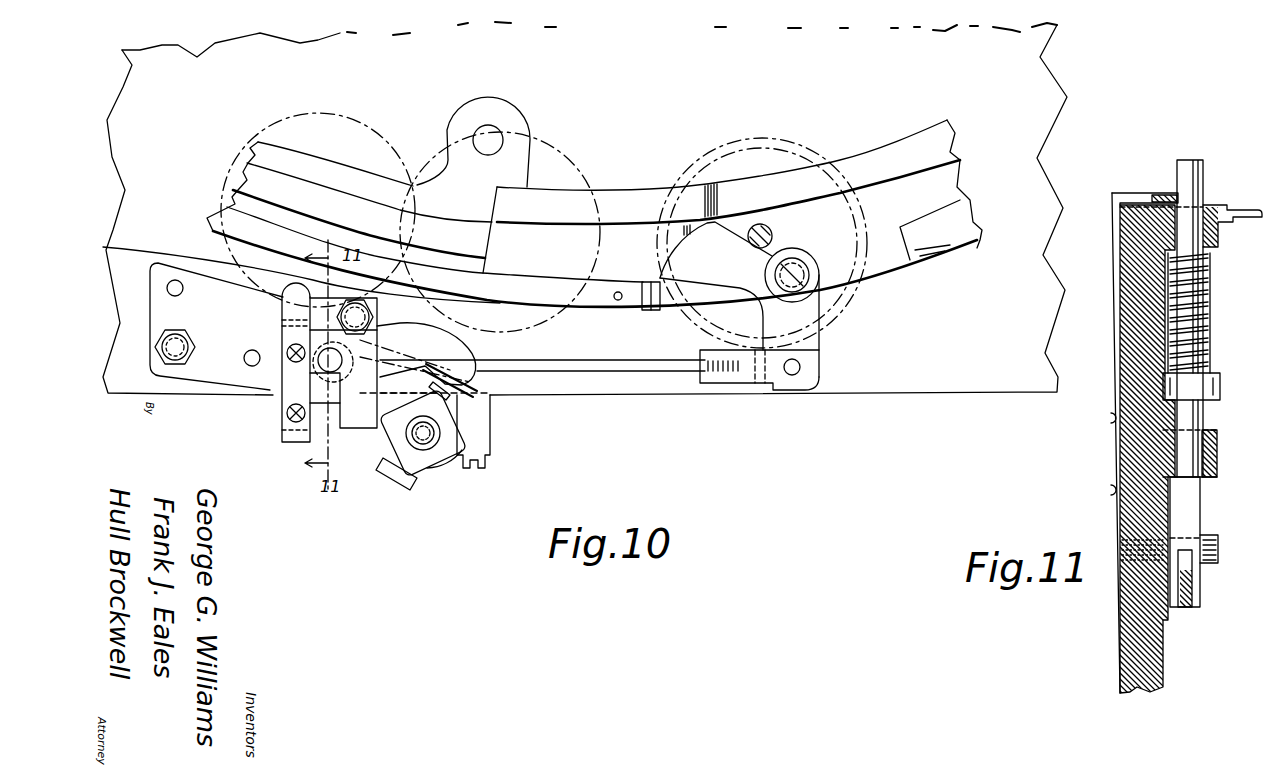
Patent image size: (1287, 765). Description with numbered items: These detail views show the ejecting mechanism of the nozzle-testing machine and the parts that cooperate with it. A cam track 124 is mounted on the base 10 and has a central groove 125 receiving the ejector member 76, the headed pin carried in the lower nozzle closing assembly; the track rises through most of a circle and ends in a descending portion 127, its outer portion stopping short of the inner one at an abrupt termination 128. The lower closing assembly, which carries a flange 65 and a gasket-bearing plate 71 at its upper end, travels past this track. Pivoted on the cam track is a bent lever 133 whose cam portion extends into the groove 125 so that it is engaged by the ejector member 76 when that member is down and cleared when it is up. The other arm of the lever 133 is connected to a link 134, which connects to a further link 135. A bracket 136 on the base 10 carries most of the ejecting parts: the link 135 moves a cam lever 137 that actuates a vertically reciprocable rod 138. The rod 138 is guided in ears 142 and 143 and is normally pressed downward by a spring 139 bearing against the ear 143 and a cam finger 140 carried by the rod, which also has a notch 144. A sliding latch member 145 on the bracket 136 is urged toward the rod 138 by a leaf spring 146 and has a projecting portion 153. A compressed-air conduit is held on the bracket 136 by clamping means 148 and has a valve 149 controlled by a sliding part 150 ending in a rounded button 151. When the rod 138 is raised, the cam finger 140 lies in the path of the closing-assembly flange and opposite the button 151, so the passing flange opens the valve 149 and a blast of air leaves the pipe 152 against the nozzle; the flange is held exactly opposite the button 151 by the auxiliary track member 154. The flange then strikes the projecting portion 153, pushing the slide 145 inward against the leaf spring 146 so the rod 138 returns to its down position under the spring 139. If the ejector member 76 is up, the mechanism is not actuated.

In FIG. 10, the base 10 is at (585, 208).
In FIG. 10, the flange 65 is at (560, 165).
In FIG. 10, the plate 71 is at (368, 127).
In FIG. 10, the ejector member 76 is at (774, 235).
In FIG. 10, the cam track 124 is at (937, 146).
In FIG. 10, the central groove 125 is at (948, 188).
In FIG. 10, the descending portion 127 is at (636, 197).
In FIG. 10, the abrupt termination 128 is at (945, 254).
In FIG. 10, the bent lever 133 is at (812, 300).
In FIG. 10, the link 134 is at (812, 358).
In FIG. 10, the link 135 is at (652, 359).
In FIG. 11, the link 135 is at (1190, 607).
In FIG. 11, the bracket 136 is at (1130, 613).
In FIG. 11, the cam lever 137 is at (1200, 515).
In FIG. 10, the vertically reciprocable rod 138 is at (340, 368).
In FIG. 11, the vertically reciprocable rod 138 is at (1218, 455).
In FIG. 11, the spring 139 is at (1212, 308).
In FIG. 10, the cam finger 140 is at (418, 354).
In FIG. 11, the cam finger 140 is at (1222, 392).
In FIG. 11, the ear 142 is at (1220, 440).
In FIG. 11, the ear 143 is at (1219, 238).
In FIG. 11, the notch 144 is at (1197, 207).
In FIG. 10, the sliding latch member 145 is at (291, 387).
In FIG. 11, the sliding latch member 145 is at (1143, 195).
In FIG. 10, the leaf spring 146 is at (296, 443).
In FIG. 11, the leaf spring 146 is at (1117, 273).
In FIG. 10, the clamping means 148 is at (492, 452).
In FIG. 10, the valve 149 is at (428, 475).
In FIG. 10, the sliding part 150 is at (470, 406).
In FIG. 10, the button 151 is at (483, 389).
In FIG. 10, the pipe 152 is at (445, 433).
In FIG. 10, the projecting portion 153 is at (291, 310).
In FIG. 11, the projecting portion 153 is at (1268, 232).
In FIG. 10, the auxiliary track member 154 is at (610, 305).